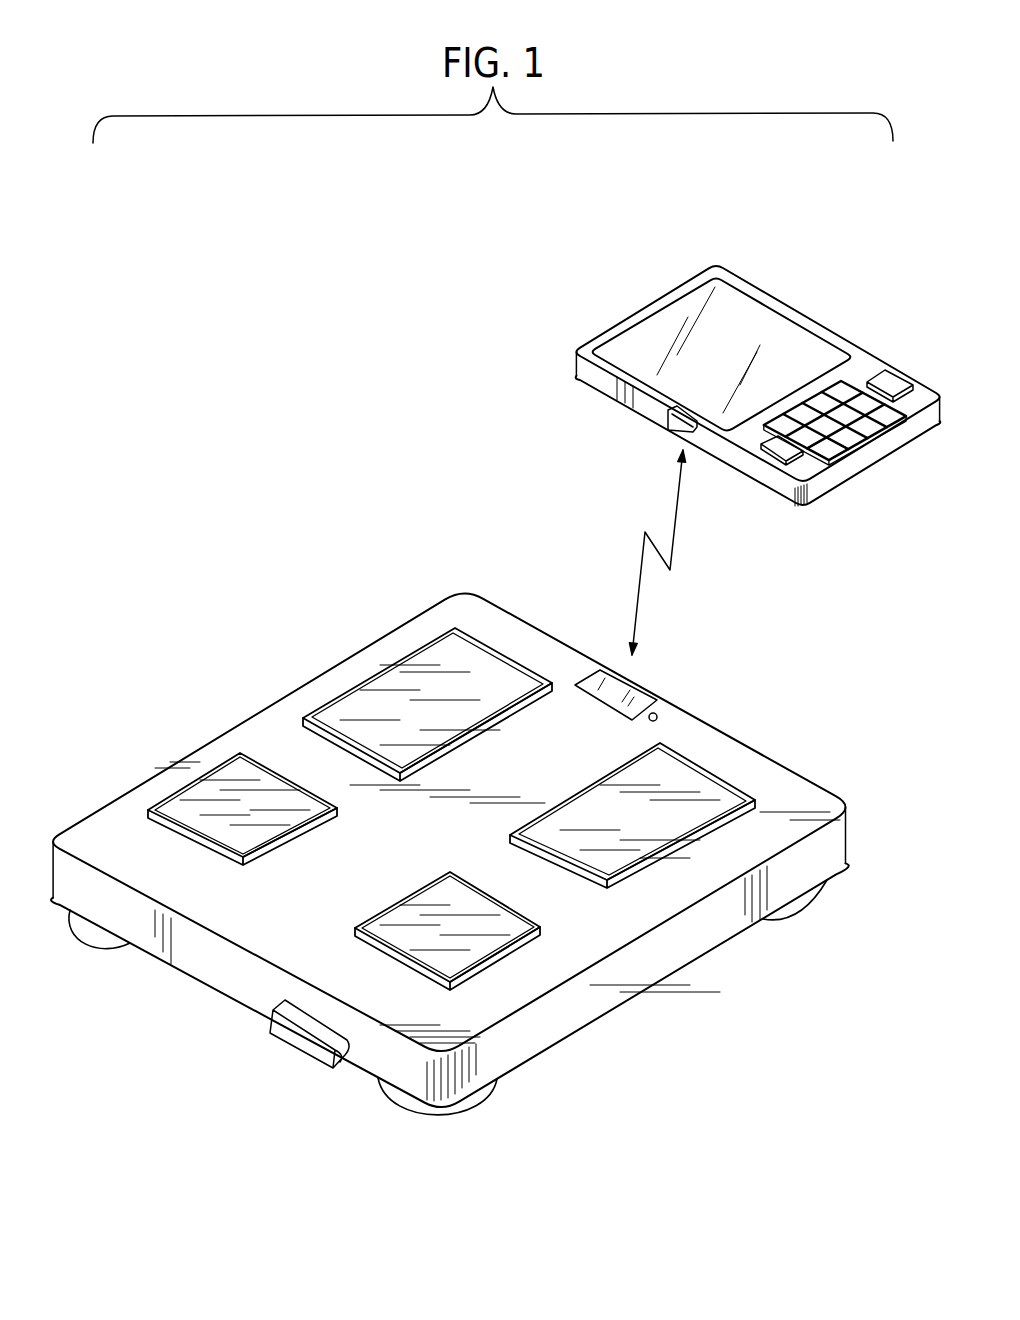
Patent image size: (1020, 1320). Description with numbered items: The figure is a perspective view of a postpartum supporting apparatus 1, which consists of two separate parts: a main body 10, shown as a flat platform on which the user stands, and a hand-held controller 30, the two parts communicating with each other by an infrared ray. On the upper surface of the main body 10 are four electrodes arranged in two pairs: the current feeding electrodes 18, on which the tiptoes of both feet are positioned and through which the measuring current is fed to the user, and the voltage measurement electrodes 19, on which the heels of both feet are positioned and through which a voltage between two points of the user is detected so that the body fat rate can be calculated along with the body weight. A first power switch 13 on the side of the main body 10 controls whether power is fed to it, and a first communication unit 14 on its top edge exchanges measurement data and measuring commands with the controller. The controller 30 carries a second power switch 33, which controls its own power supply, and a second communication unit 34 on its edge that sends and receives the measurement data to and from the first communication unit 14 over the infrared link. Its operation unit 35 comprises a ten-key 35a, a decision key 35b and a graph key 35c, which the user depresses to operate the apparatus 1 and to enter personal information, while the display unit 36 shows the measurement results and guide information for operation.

The postpartum supporting apparatus 1 is at (428, 512).
The main body 10 is at (668, 1002).
The first power switch 13 is at (303, 1040).
The first communication unit 14 is at (627, 677).
The current feeding electrodes 18 is at (412, 705).
The voltage measurement electrodes 19 is at (242, 792).
The controller 30 is at (753, 264).
The second power switch 33 is at (890, 382).
The second communication unit 34 is at (682, 432).
The operation unit 35 is at (809, 459).
The ten-key 35a is at (902, 418).
The decision key 35b is at (843, 452).
The graph key 35c is at (767, 455).
The display unit 36 is at (803, 347).